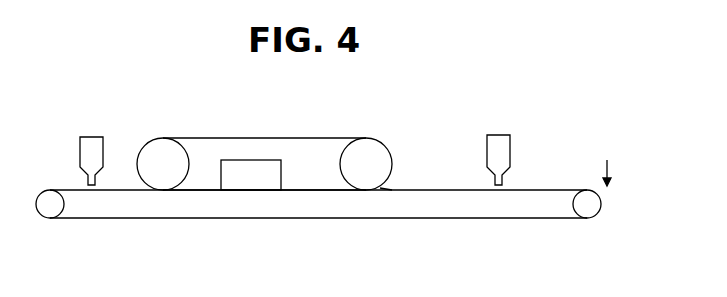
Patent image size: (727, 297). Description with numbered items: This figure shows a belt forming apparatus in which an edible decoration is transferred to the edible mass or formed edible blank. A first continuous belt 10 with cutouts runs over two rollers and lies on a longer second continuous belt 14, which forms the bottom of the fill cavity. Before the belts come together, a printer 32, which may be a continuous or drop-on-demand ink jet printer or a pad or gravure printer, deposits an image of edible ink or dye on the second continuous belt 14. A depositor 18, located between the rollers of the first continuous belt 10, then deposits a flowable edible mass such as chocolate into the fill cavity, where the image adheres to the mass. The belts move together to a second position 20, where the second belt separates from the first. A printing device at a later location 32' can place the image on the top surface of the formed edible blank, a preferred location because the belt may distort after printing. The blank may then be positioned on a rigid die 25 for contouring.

The first continuous belt 10 is at (297, 137).
The second continuous belt 14 is at (335, 218).
The depositor 18 is at (247, 160).
The second position 20 is at (380, 188).
The die 25 is at (607, 163).
The printer 32 is at (104, 132).
The printing device location 32' is at (513, 130).